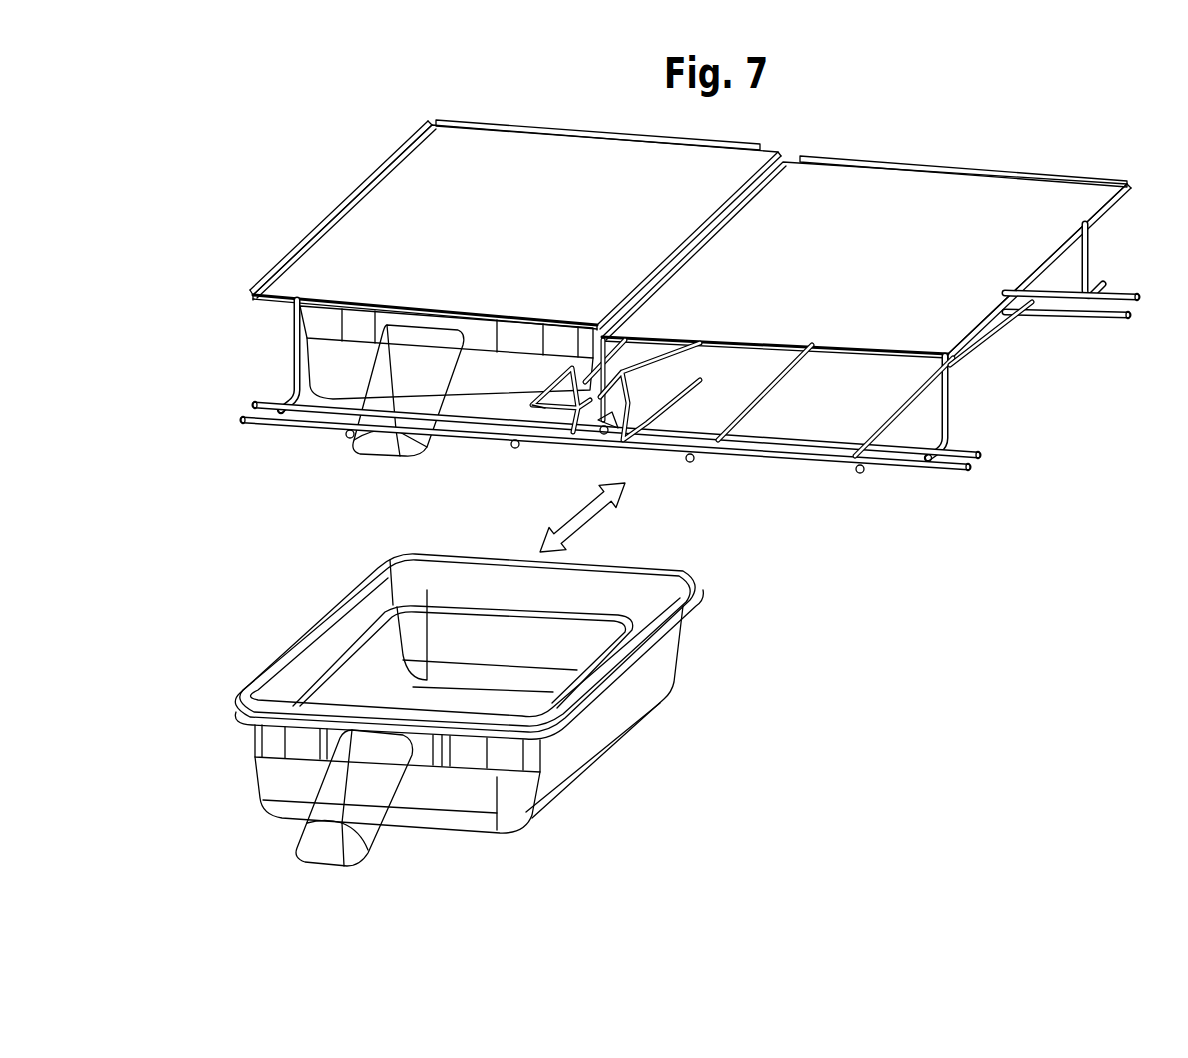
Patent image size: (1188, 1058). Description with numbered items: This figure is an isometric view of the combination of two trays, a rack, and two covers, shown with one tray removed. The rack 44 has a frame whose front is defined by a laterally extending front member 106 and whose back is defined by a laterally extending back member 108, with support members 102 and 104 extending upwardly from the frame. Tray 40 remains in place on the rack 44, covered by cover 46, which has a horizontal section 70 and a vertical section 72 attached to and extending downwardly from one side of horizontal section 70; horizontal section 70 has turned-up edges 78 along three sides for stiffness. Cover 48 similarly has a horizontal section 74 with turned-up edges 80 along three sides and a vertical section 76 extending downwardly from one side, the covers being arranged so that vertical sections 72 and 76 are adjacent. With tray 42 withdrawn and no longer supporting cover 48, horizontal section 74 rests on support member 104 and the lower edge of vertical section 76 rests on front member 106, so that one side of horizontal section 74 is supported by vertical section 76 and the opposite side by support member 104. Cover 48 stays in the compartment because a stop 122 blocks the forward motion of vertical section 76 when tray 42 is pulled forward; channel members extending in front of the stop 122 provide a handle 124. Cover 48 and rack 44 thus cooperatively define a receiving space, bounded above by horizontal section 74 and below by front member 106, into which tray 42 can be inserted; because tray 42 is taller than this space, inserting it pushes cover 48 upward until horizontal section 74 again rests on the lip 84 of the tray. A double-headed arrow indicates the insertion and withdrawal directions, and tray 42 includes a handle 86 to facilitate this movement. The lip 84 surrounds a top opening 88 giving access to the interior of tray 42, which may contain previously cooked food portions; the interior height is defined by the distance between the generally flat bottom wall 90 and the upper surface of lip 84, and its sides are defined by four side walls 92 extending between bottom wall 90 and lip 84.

The tray 40 is at (446, 381).
The tray 42 is at (465, 727).
The rack 44 is at (958, 471).
The cover 46 is at (567, 126).
The cover 48 is at (905, 160).
The horizontal section 70 is at (502, 248).
The vertical section 72 is at (590, 434).
The horizontal section 74 is at (856, 282).
The vertical section 76 is at (648, 433).
The turned-up edges 78 is at (428, 128).
The turned-up edges 80 is at (1089, 174).
The lip 84 is at (690, 580).
The handle 86 is at (318, 868).
The top opening 88 is at (270, 683).
The bottom wall 90 is at (451, 712).
The side walls 92 is at (501, 660).
The support member 102 is at (293, 326).
The support member 104 is at (950, 413).
The front member 106 is at (815, 468).
The back member 108 is at (1120, 281).
The stop 122 is at (606, 431).
The handle 124 is at (545, 410).